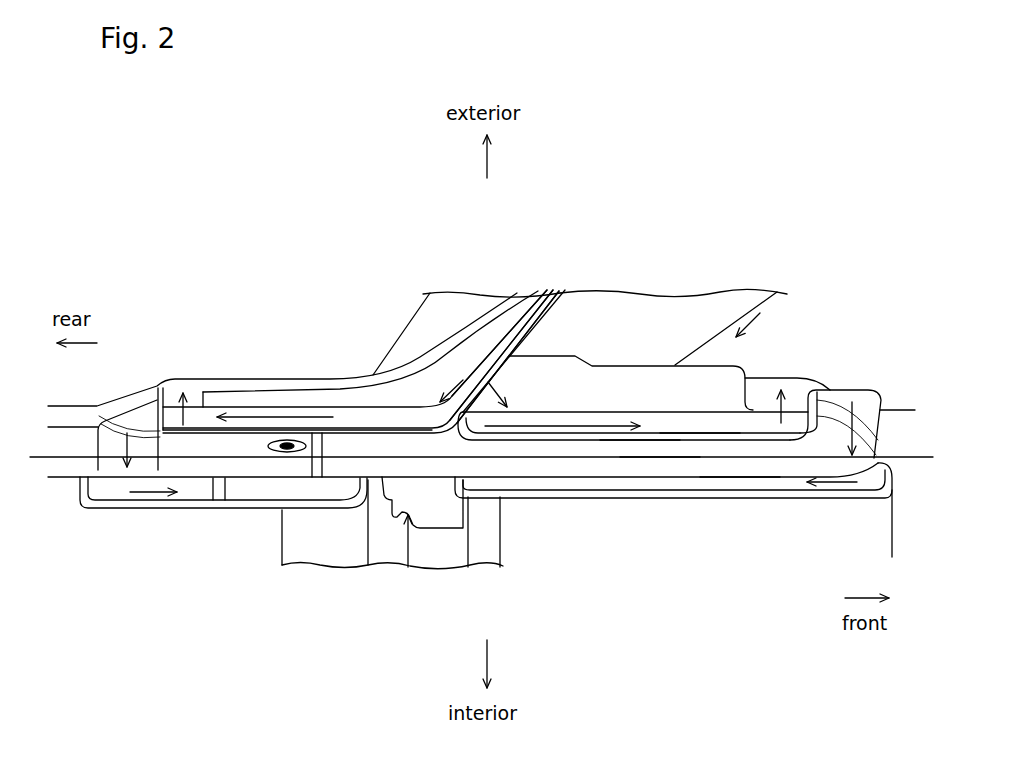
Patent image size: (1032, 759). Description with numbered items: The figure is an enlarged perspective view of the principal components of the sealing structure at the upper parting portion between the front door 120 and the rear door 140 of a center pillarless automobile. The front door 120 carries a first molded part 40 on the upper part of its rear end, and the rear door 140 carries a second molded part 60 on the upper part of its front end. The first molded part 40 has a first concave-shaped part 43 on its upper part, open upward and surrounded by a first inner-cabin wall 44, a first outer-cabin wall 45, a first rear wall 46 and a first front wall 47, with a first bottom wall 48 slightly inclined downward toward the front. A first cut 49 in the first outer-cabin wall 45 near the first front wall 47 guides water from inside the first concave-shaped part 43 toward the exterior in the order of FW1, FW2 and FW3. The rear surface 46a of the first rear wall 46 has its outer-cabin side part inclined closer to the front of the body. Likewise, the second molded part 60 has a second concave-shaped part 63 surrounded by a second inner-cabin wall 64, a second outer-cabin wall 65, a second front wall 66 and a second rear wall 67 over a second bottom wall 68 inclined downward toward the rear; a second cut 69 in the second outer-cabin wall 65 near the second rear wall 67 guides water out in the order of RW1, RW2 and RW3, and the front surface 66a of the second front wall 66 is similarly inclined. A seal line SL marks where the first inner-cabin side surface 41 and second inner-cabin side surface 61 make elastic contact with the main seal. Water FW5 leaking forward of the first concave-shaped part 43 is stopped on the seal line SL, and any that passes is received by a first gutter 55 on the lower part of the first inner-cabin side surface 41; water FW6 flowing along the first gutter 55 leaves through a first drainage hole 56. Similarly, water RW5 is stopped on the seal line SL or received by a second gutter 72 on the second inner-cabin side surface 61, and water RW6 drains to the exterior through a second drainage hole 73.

The first molded part 40 is at (792, 294).
The first inner-cabin side surface 41 is at (656, 458).
The first concave-shaped part 43 is at (730, 450).
The first inner-cabin wall 44 is at (636, 441).
The first outer-cabin wall 45 is at (637, 385).
The first rear wall 46 is at (497, 400).
The rear surface 46a is at (480, 410).
The first front wall 47 is at (852, 392).
The first bottom wall 48 is at (692, 442).
The first cut 49 is at (762, 405).
The first gutter 55 is at (777, 500).
The first drainage hole 56 is at (465, 528).
The second molded part 60 is at (173, 360).
The second inner-cabin side surface 61 is at (277, 470).
The second concave-shaped part 63 is at (313, 470).
The second inner-cabin wall 64 is at (238, 433).
The second outer-cabin wall 65 is at (320, 430).
The second front wall 66 is at (462, 355).
The front surface 66a is at (488, 345).
The second rear wall 67 is at (187, 433).
The second bottom wall 68 is at (207, 410).
The second cut 69 is at (162, 386).
The second gutter 72 is at (93, 505).
The second drainage hole 73 is at (217, 500).
The front door 120 is at (697, 318).
The rear door 140 is at (378, 312).
The seal line SL is at (40, 462).
The water RW1 is at (380, 368).
The water RW2 is at (278, 410).
The water RW3 is at (197, 405).
The water RW5 is at (93, 425).
The water RW6 is at (147, 518).
The water FW1 is at (510, 380).
The water FW2 is at (588, 432).
The water FW3 is at (797, 385).
The water FW5 is at (884, 405).
The water FW6 is at (836, 499).